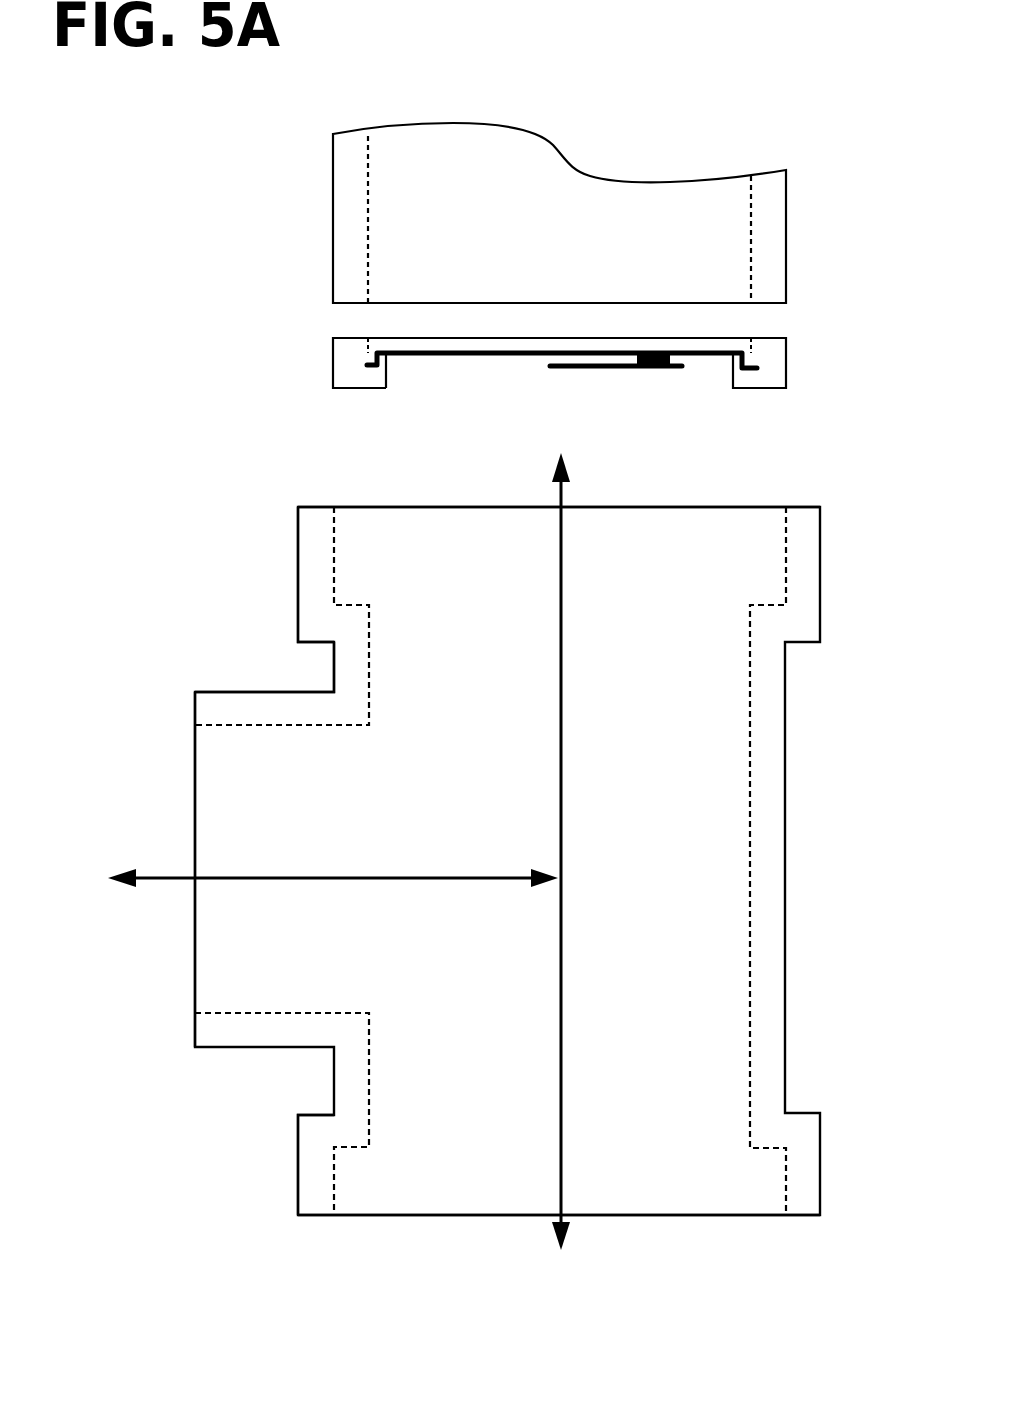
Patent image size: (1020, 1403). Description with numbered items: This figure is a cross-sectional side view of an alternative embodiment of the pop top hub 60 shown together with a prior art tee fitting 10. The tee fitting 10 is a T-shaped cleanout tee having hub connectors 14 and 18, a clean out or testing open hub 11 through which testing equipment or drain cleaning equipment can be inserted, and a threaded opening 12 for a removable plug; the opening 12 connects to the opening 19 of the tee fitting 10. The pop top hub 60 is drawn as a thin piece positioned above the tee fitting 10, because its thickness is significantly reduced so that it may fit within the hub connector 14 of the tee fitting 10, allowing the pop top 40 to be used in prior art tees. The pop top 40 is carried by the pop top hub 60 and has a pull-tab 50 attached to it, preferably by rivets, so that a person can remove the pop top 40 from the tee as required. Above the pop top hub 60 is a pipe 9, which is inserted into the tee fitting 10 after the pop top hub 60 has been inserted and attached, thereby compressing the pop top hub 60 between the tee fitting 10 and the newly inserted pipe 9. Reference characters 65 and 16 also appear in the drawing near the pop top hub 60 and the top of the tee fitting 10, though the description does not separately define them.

The pipe 9 is at (333, 253).
The pop top hub 60 is at (484, 382).
The housing 65 is at (333, 373).
The pop top 40 is at (505, 357).
The pull-tab 50 is at (612, 368).
The tee fitting 10 is at (785, 818).
The top edge 16 is at (413, 525).
The hub connector 14 is at (298, 590).
The clean out or testing open hub 11 is at (263, 692).
The threaded opening 12 is at (263, 808).
The hub connector 18 is at (298, 1182).
The opening 19 is at (472, 1182).